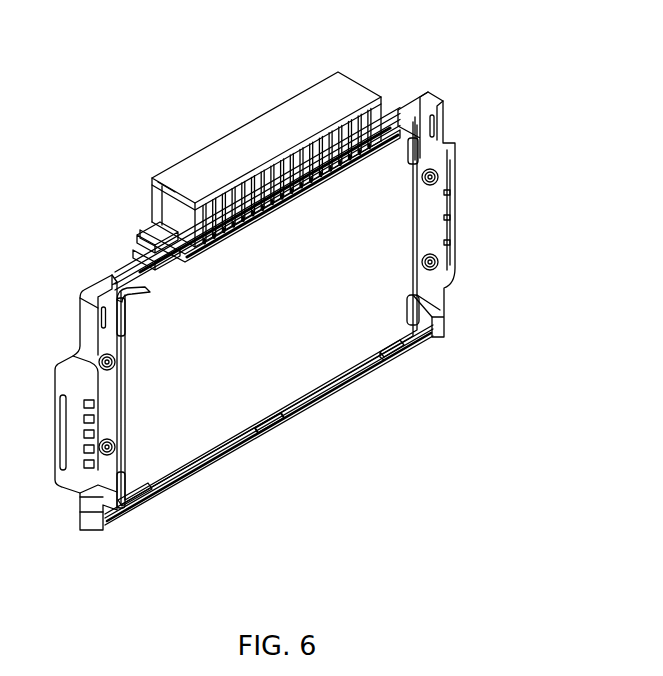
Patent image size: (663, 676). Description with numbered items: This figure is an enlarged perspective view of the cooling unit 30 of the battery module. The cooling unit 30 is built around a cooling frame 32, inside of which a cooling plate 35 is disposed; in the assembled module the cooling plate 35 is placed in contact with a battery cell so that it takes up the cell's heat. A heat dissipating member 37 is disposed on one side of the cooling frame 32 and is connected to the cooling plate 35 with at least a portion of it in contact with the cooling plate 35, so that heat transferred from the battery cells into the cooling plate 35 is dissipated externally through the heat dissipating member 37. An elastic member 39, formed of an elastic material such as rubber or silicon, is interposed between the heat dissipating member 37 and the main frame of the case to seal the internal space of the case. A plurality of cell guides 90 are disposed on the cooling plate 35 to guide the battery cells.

The cooling unit 30 is at (418, 66).
The cooling frame 32 is at (425, 150).
The cooling plate 35 is at (370, 238).
The heat dissipating member 37 is at (249, 142).
The elastic member 39 is at (137, 238).
The cell guide 90 is at (415, 312).